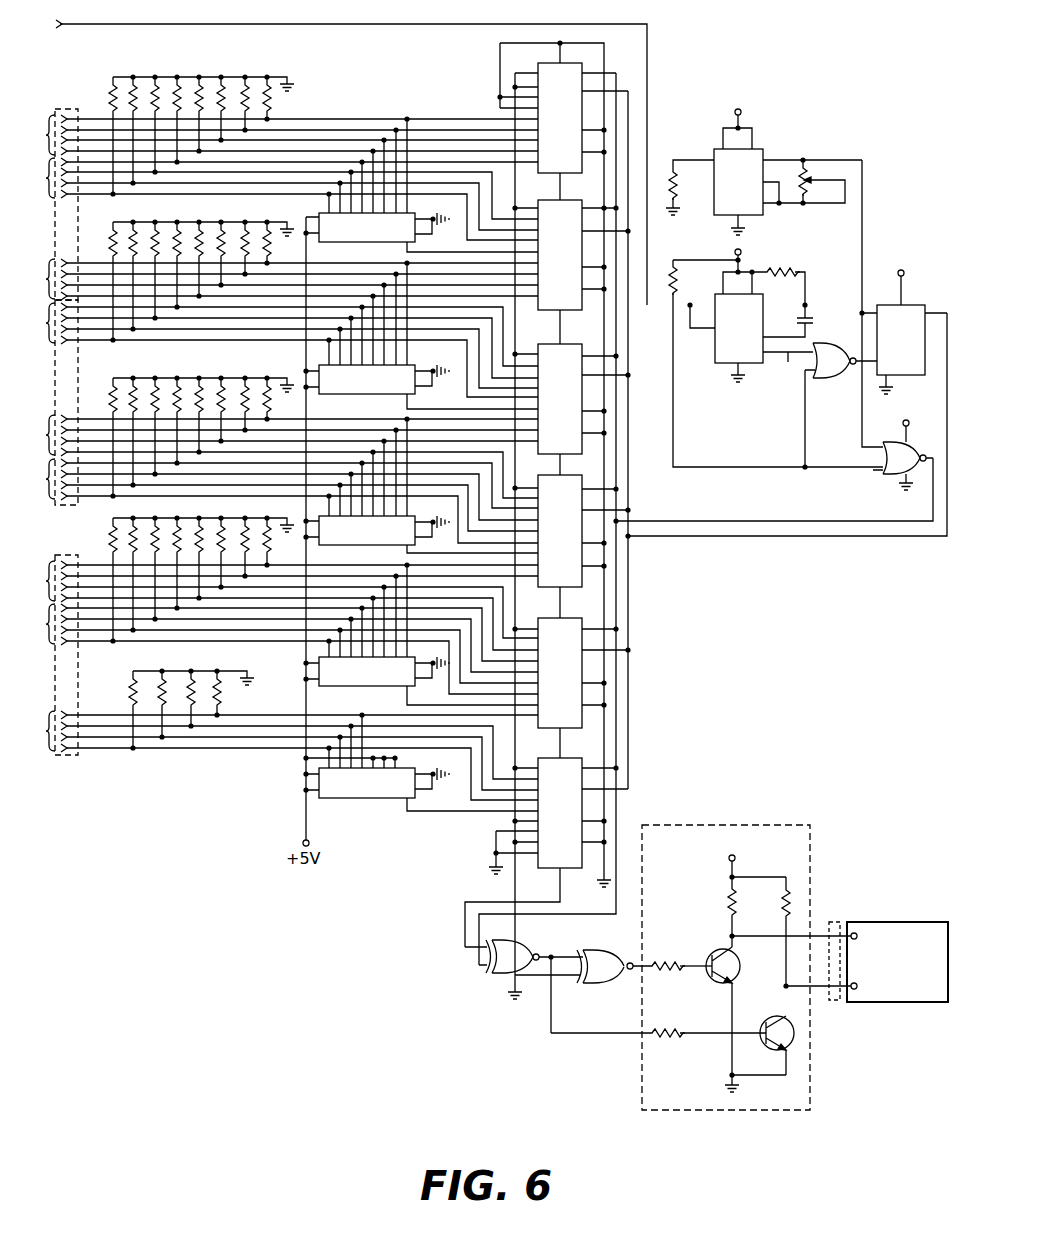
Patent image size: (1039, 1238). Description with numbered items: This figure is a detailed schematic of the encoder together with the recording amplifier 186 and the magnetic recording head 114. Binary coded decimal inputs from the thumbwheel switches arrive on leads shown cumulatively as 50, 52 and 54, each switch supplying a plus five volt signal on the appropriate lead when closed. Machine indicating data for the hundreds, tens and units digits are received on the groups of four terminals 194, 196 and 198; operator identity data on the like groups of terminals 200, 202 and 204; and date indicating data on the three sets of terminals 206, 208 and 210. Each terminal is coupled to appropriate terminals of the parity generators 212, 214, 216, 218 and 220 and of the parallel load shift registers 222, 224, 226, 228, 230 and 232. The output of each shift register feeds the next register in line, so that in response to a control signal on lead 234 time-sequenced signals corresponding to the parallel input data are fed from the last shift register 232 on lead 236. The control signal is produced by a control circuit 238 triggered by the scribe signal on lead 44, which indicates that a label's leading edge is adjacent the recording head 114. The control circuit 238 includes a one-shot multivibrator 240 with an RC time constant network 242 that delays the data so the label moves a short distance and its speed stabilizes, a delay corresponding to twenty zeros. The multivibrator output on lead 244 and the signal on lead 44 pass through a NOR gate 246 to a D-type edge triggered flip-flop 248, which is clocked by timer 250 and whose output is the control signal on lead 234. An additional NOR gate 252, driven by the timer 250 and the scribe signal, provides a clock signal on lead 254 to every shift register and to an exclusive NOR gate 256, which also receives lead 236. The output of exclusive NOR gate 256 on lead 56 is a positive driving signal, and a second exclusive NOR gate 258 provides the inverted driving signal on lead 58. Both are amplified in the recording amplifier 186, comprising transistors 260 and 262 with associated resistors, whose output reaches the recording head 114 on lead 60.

The lead 44 is at (345, 152).
The terminals 194 is at (275, 135).
The terminals 196 is at (275, 199).
The terminals 198 is at (275, 279).
The terminals 200 is at (275, 350).
The terminals 202 is at (275, 456).
The terminals 204 is at (275, 501).
The terminals 206 is at (275, 605).
The terminals 208 is at (275, 649).
The terminals 210 is at (275, 755).
The lead 50 is at (54, 234).
The lead 52 is at (54, 384).
The lead 54 is at (54, 656).
The parity generator 212 is at (378, 239).
The parity generator 214 is at (378, 391).
The parity generator 216 is at (378, 542).
The parity generator 218 is at (378, 683).
The parity generator 220 is at (378, 794).
The parallel load shift register 222 is at (574, 106).
The parallel load shift register 224 is at (574, 243).
The parallel load shift register 226 is at (574, 387).
The parallel load shift register 228 is at (574, 518).
The parallel load shift register 230 is at (574, 661).
The parallel load shift register 232 is at (574, 801).
The lead 234 is at (786, 444).
The lead 236 is at (465, 920).
The control circuit 238 is at (762, 392).
The one-shot multivibrator 240 is at (717, 344).
The RC time constant network 242 is at (813, 268).
The lead 244 is at (785, 375).
The NOR gate 246 is at (838, 379).
The D-type edge triggered flip-flop 248 is at (913, 348).
The timer 250 is at (751, 184).
The NOR gate 252 is at (890, 476).
The lead 254 is at (773, 491).
The exclusive NOR gate 256 is at (498, 981).
The exclusive NOR gate 258 is at (600, 986).
The transistor 260 is at (714, 952).
The transistor 262 is at (764, 1022).
The lead 56 is at (620, 1036).
The lead 58 is at (637, 960).
The lead 60 is at (832, 923).
The magnetic recording head 114 is at (905, 1003).
The recording amplifier 186 is at (749, 985).